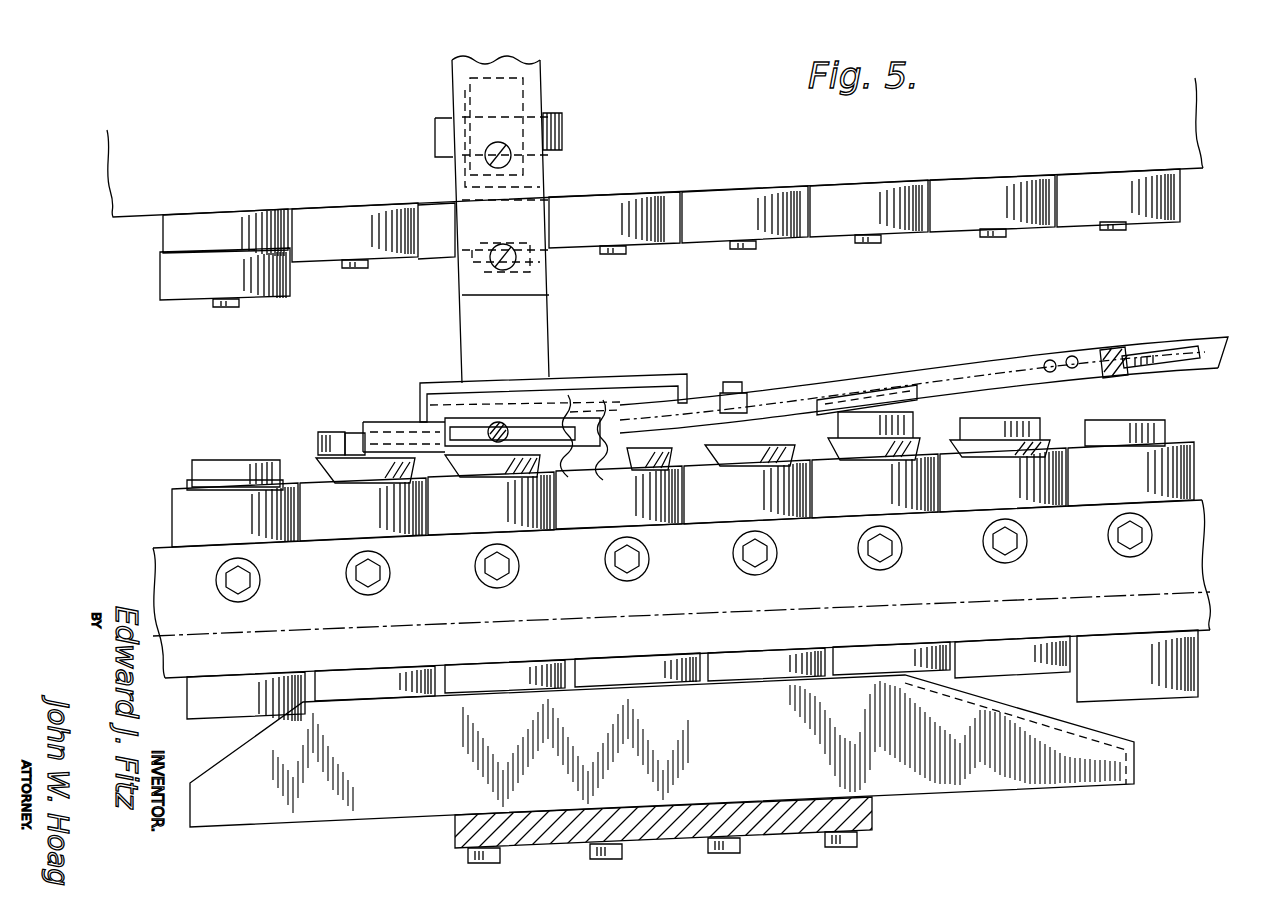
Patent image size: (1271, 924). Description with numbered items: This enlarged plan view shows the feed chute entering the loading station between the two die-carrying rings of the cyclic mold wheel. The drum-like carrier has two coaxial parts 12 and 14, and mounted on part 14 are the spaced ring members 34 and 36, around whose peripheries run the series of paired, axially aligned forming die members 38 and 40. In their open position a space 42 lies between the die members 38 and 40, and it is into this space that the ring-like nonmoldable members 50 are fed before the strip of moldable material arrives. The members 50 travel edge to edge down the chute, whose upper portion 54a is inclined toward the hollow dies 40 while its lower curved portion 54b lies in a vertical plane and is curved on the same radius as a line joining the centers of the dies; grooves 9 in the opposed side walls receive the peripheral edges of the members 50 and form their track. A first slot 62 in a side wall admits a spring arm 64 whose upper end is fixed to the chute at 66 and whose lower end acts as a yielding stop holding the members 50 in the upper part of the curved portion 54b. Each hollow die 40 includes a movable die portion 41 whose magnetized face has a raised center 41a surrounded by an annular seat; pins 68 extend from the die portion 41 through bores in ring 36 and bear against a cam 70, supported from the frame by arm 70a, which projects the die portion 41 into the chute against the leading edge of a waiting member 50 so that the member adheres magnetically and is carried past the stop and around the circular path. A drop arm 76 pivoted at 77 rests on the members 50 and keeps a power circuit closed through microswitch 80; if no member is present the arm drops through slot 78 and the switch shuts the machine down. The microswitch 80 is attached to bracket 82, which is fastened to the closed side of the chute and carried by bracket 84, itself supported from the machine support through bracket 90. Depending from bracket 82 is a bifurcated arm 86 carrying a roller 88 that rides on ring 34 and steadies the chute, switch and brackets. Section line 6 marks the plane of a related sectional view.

The section line 6- 6 is at (182, 458).
The groove 9 is at (1230, 345).
The carrier part 12 is at (100, 208).
The carrier part 14 is at (138, 547).
The ring member 34 is at (1180, 130).
The ring member 36 is at (1192, 540).
The forming die member 38 is at (345, 296).
The hollow forming die 40 is at (455, 525).
The die portion 41 is at (670, 457).
The raised center 41a is at (250, 462).
The space 42 is at (1162, 263).
The nonmoldable member 50 is at (190, 478).
The upper chute portion 54a is at (1135, 347).
The lower curved chute portion 54b is at (835, 388).
The first slot 62 is at (880, 382).
The spring arm 64 is at (960, 380).
The spring arm fixing point 66 is at (1062, 360).
The pin 68 is at (385, 690).
The cam 70 is at (240, 752).
The arm 70a is at (640, 836).
The drop arm 76 is at (545, 430).
The pivot 77 is at (730, 382).
The slot 78 is at (472, 425).
The microswitch 80 is at (640, 382).
The bracket 82 is at (418, 388).
The bracket 84 is at (472, 318).
The bifurcated arm 86 is at (545, 178).
The roller 88 is at (565, 128).
The bracket 90 is at (542, 80).